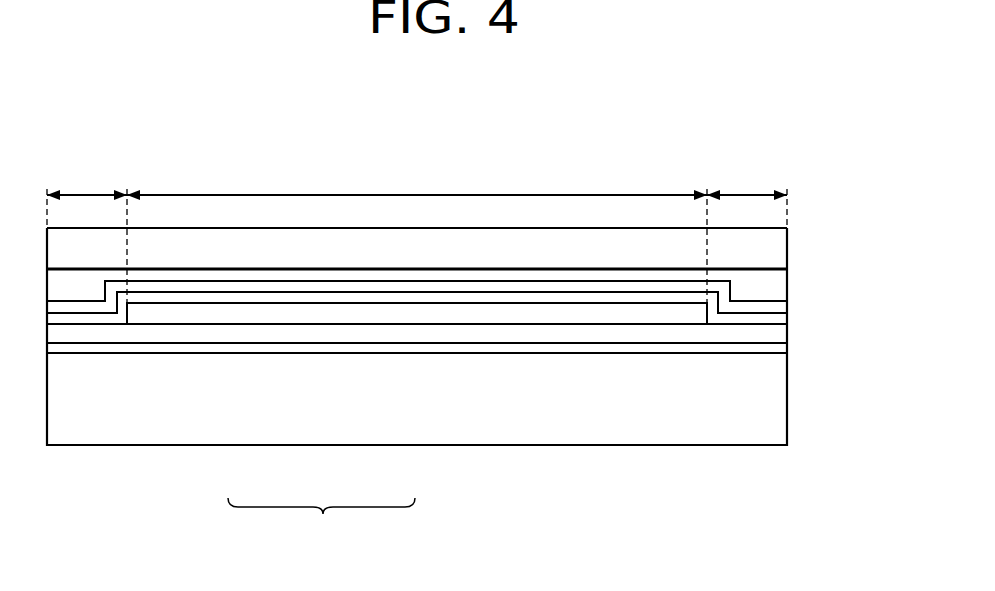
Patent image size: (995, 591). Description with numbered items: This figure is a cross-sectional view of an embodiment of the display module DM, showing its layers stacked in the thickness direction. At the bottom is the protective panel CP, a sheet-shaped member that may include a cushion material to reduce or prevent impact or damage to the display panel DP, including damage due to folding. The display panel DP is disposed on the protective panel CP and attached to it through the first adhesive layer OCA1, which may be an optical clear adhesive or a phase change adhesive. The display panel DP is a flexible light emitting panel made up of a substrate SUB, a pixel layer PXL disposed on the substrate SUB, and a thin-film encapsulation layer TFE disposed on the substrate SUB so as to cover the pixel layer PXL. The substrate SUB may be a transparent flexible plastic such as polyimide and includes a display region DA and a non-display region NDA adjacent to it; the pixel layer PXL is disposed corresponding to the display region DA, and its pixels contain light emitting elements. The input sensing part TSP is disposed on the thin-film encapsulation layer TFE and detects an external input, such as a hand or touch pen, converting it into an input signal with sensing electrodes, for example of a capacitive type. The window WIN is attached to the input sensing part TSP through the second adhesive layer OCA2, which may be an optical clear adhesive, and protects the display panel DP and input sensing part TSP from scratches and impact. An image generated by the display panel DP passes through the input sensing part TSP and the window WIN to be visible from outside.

The display module DM is at (826, 155).
The window WIN is at (531, 252).
The second adhesive layer OCA2 is at (775, 287).
The input sensing part TSP is at (460, 285).
The thin-film encapsulation layer TFE is at (392, 298).
The pixel layer PXL is at (323, 317).
The substrate SUB is at (252, 332).
The first adhesive layer OCA1 is at (775, 349).
The protective panel CP is at (775, 405).
The display panel DP is at (321, 520).
The non-display region NDA is at (417, 197).
The display region DA is at (417, 235).